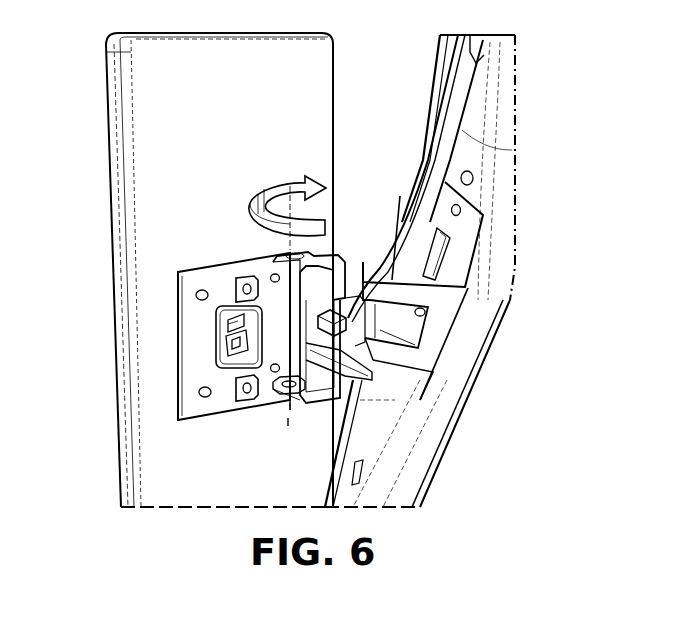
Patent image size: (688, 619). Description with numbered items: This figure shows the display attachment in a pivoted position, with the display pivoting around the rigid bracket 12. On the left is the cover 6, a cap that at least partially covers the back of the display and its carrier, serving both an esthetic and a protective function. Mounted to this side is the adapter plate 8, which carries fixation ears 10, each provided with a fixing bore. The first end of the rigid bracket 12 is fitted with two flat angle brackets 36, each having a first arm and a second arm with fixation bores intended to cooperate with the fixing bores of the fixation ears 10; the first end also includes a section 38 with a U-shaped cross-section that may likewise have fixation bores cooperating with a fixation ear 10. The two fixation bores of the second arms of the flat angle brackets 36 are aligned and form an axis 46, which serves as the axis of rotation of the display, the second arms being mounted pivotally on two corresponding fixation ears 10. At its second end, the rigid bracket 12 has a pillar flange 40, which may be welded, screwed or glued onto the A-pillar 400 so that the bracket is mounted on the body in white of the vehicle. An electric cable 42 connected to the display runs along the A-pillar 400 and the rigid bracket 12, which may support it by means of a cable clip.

The cover 6 is at (200, 458).
The adapter plate 8 is at (198, 344).
The fixation ears 10 is at (240, 287).
The rigid bracket 12 is at (406, 357).
The flat angle brackets 36 is at (320, 250).
The section with a U-shaped cross-section 38 is at (318, 345).
The pillar flange 40 is at (458, 228).
The electric cable 42 is at (418, 172).
The axis 46 is at (291, 418).
The A-pillar 400 is at (490, 108).